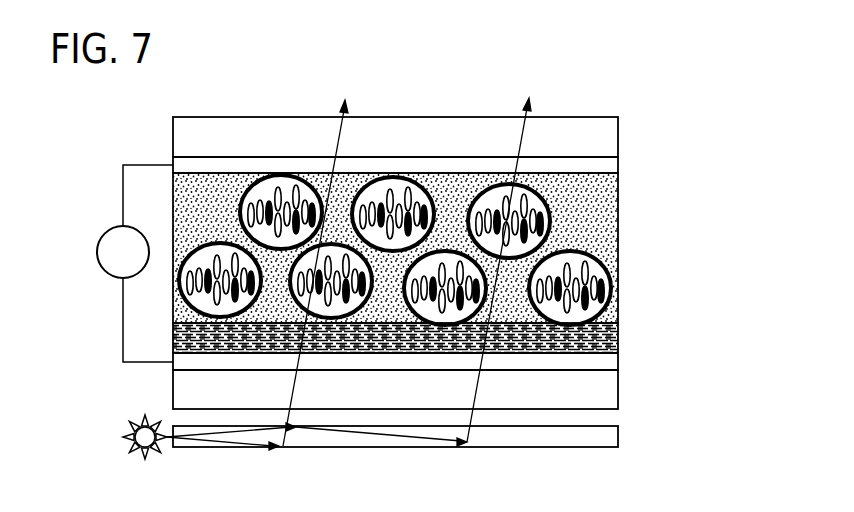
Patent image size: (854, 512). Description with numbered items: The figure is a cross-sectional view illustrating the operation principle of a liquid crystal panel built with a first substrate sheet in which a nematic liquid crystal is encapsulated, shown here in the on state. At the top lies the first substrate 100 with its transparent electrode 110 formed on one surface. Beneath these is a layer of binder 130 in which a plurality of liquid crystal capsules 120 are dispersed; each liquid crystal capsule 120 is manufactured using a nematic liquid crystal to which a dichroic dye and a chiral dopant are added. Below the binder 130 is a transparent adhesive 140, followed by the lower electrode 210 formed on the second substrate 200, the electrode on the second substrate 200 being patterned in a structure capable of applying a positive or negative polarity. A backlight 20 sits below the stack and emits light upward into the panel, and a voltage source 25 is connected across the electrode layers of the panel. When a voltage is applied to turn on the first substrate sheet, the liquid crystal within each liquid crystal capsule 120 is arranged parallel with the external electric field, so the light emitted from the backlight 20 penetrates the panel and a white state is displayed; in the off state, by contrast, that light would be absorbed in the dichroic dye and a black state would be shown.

The first substrate 100 is at (603, 130).
The transparent electrode 110 is at (605, 163).
The binder 130 is at (605, 225).
The liquid crystal capsule 120 is at (606, 255).
The transparent adhesive 140 is at (603, 333).
The lower electrode 210 is at (600, 362).
The second substrate 200 is at (603, 400).
The backlight 20 is at (605, 433).
The voltage source 25 is at (100, 231).